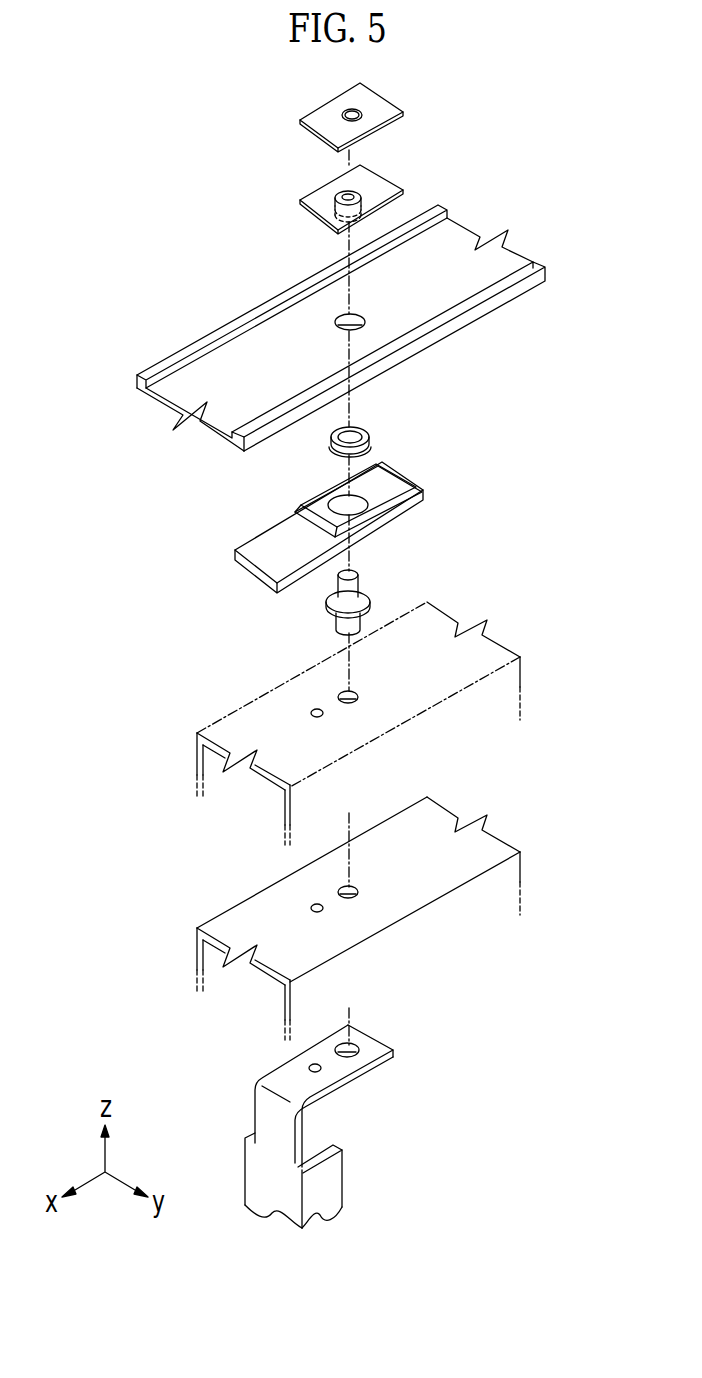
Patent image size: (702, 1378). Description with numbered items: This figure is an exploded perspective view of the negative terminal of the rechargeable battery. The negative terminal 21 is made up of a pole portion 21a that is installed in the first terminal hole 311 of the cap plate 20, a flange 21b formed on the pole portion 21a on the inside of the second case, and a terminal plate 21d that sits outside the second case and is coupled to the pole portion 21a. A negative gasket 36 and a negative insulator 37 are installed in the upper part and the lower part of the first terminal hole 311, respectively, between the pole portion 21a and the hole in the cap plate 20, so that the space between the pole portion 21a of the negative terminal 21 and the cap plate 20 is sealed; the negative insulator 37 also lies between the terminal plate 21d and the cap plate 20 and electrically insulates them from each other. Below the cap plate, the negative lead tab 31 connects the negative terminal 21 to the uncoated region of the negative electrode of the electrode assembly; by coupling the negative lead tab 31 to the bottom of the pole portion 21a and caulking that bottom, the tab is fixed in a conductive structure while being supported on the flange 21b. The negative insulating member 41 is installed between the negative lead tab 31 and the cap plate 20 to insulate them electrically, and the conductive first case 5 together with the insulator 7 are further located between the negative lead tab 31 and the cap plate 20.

The cap plate 20 is at (341, 328).
The negative terminal 21 is at (346, 596).
The pole portion 21a is at (346, 596).
The flange 21b is at (336, 618).
The terminal plate 21d is at (313, 121).
The first terminal hole 311 is at (362, 327).
The negative gasket 36 is at (370, 438).
The negative insulator 37 is at (313, 198).
The negative insulating member 41 is at (253, 537).
The insulator 7 is at (517, 652).
The first case 5 is at (505, 880).
The negative lead tab 31 is at (268, 1108).